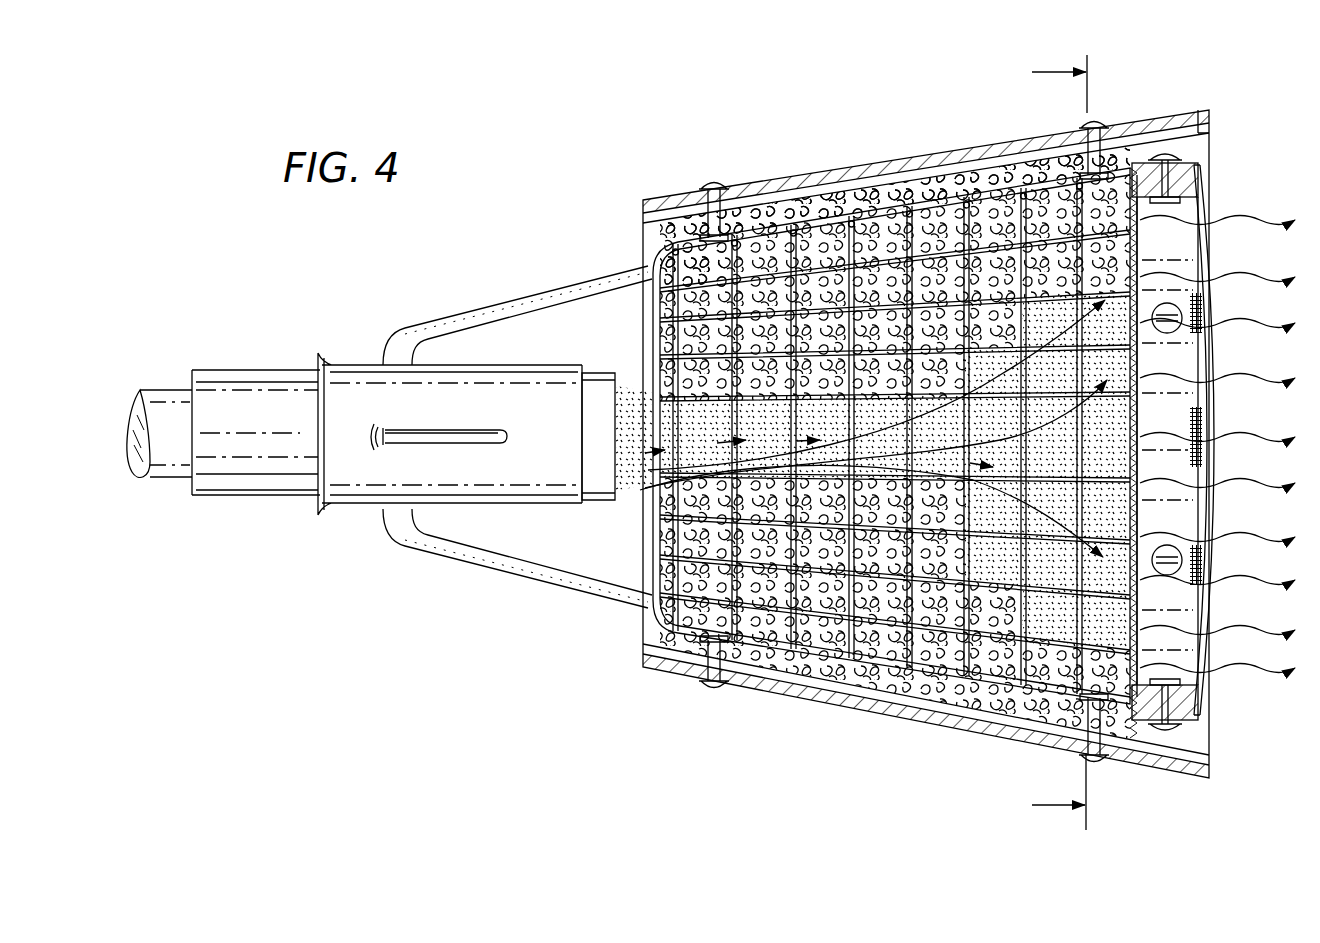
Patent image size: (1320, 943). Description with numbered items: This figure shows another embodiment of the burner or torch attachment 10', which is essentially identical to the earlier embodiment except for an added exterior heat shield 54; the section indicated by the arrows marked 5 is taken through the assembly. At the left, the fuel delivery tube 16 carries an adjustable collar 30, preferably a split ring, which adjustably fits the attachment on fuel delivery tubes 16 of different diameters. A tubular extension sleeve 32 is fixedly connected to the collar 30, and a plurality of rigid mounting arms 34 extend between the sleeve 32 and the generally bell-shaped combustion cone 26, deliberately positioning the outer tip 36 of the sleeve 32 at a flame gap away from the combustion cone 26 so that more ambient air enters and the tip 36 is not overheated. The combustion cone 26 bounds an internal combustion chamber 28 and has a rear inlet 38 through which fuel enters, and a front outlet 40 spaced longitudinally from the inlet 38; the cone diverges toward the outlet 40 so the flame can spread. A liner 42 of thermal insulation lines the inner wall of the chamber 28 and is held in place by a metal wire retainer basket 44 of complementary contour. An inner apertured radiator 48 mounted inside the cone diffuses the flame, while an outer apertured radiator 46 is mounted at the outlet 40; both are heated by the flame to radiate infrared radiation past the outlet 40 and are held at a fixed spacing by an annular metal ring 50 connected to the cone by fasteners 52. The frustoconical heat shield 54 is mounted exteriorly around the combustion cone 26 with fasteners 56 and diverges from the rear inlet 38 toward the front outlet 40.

The torch attachment 10' is at (504, 161).
The fuel delivery tube 16 is at (172, 418).
The adjustable collar 30 is at (228, 387).
The tubular extension sleeve 32 is at (558, 368).
The rigid mounting arms 34 is at (440, 322).
The outer tip 36 is at (625, 375).
The rear inlet 38 is at (648, 350).
The combustion cone 26 is at (883, 203).
The combustion chamber 28 is at (933, 225).
The liner 42 is at (820, 250).
The metal wire retainer basket 44 is at (690, 288).
The inner apertured radiator 48 is at (880, 432).
The front outlet 40 is at (1212, 262).
The outer apertured radiator 46 is at (1208, 190).
The annular metal ring 50 is at (1208, 114).
The fasteners 52 is at (1165, 152).
The heat shield 54 is at (993, 146).
The fasteners 56 is at (718, 185).
The section line 5- 5 is at (1046, 442).